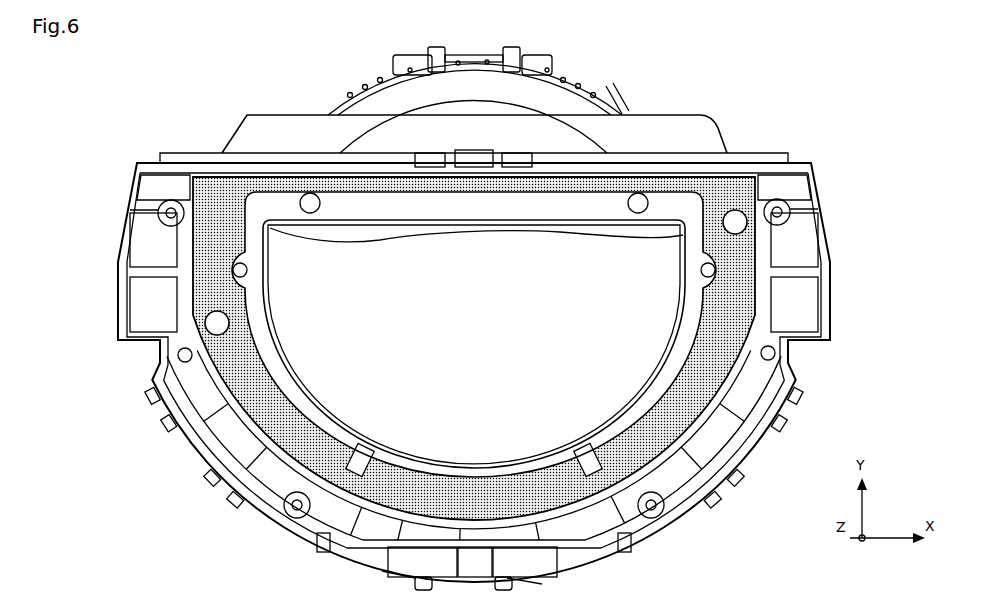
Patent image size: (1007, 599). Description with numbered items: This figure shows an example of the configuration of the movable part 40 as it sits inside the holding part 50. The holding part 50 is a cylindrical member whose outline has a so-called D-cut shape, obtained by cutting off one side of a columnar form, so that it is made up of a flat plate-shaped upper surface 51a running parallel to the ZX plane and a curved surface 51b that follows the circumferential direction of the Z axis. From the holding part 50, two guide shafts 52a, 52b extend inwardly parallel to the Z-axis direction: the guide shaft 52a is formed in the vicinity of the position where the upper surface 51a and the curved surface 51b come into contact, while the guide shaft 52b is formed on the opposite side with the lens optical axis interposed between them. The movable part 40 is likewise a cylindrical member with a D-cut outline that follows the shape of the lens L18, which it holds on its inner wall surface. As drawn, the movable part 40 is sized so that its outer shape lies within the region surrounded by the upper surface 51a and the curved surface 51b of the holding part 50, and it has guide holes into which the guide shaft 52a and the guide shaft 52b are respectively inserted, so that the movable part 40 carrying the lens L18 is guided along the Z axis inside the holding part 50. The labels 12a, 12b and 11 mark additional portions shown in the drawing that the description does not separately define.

The holding part 50 is at (72, 142).
The upper surface 51a is at (213, 172).
The curved surface 51b is at (160, 373).
The guide shaft 52a is at (735, 210).
The guide shaft 52b is at (207, 318).
The movable part 40 is at (263, 183).
The ring portion 12a is at (614, 348).
The ring portion 12b is at (474, 348).
The housing 11 is at (678, 405).
The lens L18 is at (464, 334).